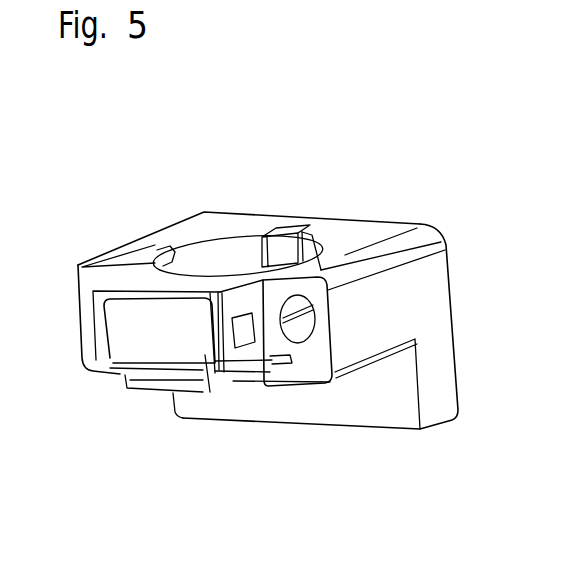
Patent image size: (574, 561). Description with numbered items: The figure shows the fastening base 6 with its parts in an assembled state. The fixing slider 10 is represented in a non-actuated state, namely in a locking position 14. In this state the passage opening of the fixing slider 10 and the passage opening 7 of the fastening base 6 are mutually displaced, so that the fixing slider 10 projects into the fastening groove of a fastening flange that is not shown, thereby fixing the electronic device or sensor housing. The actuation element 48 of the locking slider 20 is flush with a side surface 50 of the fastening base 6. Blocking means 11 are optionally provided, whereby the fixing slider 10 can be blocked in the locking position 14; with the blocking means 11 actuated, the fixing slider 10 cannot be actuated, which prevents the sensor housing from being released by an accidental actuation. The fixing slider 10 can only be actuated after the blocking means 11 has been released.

The fastening base 6 is at (345, 398).
The passage opening 7 is at (233, 268).
The fixing slider 10 is at (204, 378).
The blocking means 11 is at (240, 348).
The locking position 14 is at (149, 405).
The locking slider 20 is at (285, 243).
The actuation element 48 is at (302, 235).
The side surface 50 is at (417, 228).